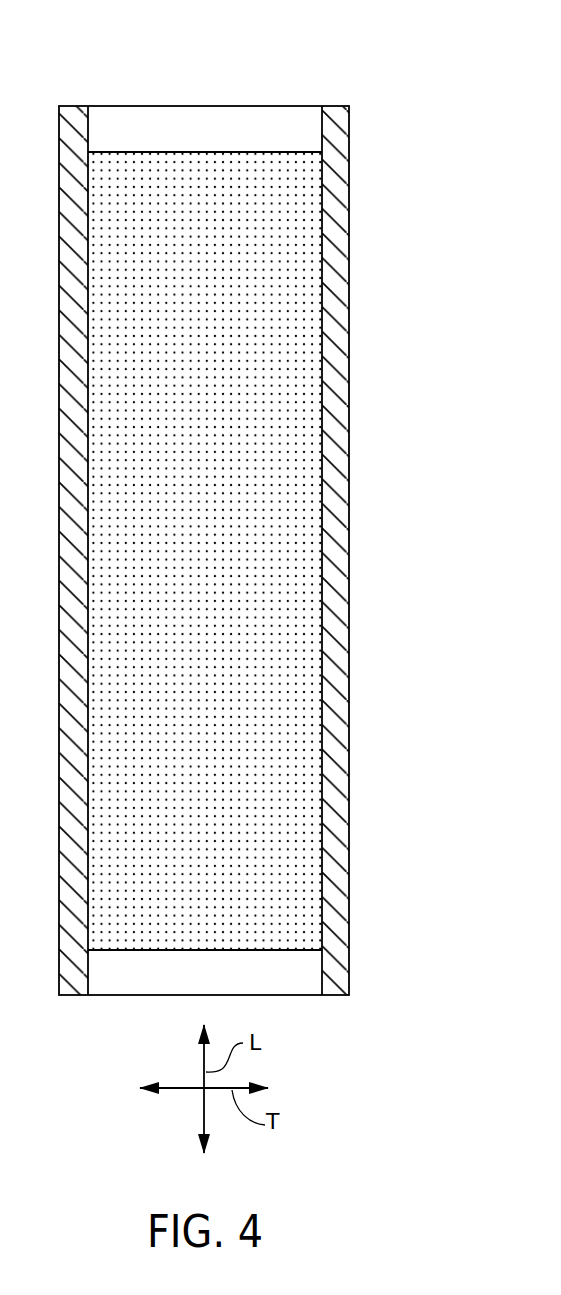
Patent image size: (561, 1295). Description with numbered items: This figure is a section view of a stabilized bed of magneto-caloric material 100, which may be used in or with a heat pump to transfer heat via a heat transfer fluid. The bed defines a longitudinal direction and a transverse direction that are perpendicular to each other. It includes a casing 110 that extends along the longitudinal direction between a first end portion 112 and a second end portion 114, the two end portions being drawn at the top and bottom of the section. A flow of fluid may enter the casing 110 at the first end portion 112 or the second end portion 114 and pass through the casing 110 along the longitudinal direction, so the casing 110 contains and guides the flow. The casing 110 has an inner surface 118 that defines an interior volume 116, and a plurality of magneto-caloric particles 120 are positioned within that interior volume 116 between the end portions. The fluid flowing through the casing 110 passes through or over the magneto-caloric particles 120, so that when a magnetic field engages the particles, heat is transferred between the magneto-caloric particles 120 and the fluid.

The stabilized bed of magneto-caloric material 100 is at (345, 72).
The casing 110 is at (334, 371).
The first end portion 112 is at (352, 128).
The second end portion 114 is at (350, 977).
The interior volume 116 is at (242, 138).
The inner surface 118 is at (89, 136).
The magneto-caloric particles 120 is at (280, 536).